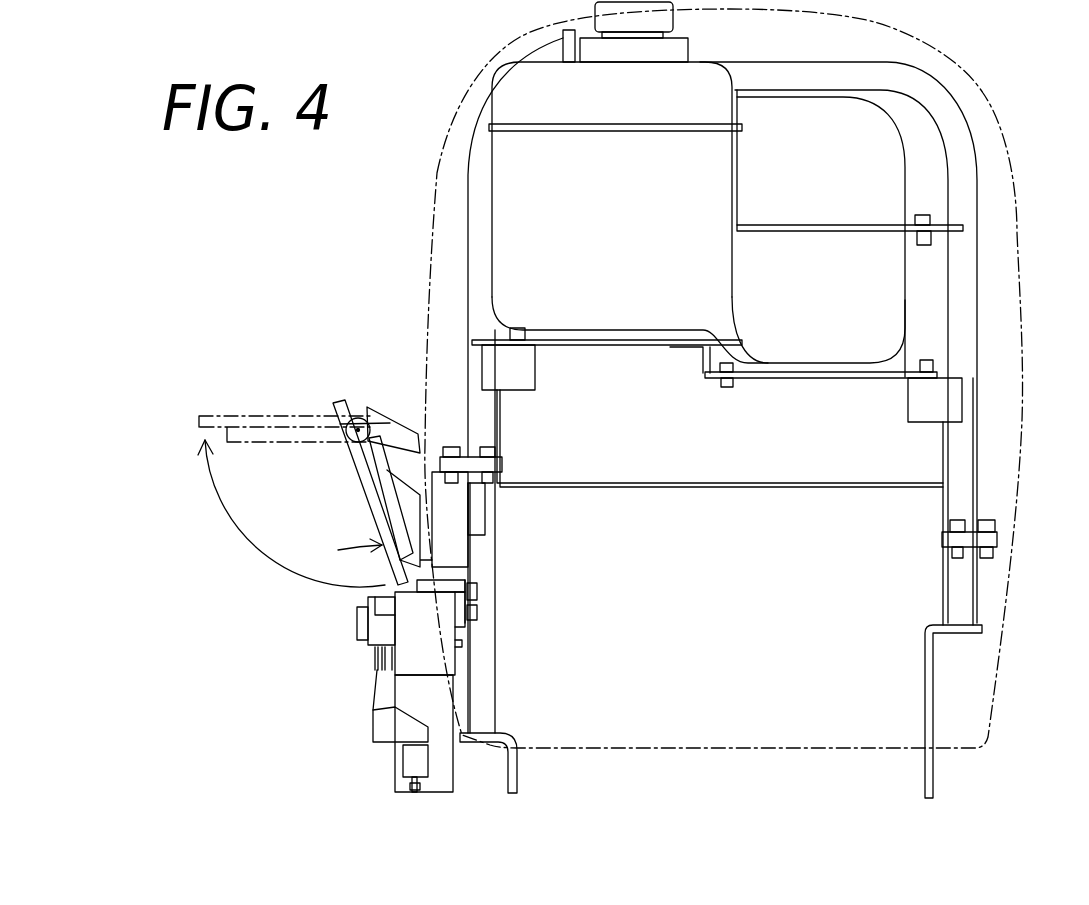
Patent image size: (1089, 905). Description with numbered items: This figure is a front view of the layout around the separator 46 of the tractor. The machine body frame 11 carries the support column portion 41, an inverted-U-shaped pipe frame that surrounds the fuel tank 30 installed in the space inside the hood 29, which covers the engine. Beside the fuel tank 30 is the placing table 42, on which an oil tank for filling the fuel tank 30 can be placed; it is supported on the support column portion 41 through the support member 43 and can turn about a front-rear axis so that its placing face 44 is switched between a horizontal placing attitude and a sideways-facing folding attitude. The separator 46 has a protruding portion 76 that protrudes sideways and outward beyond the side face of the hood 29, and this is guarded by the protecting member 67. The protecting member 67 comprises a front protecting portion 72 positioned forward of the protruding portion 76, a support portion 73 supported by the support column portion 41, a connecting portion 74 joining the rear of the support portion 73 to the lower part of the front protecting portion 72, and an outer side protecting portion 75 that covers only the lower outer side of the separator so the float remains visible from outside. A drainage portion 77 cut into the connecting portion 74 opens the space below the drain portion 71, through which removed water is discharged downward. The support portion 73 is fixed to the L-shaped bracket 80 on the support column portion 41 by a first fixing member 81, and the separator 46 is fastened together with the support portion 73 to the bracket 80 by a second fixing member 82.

The machine body frame 11 is at (517, 768).
The hood 29 is at (985, 90).
The fuel tank 30 is at (517, 90).
The support column portion 41 is at (487, 240).
The placing table 42 is at (306, 449).
The support member 43 is at (392, 457).
The placing face 44 is at (268, 413).
The separator 46 is at (383, 663).
The protecting member 67 is at (385, 762).
The drain portion 71 is at (415, 763).
The front protecting portion 72 is at (437, 697).
The support portion 73 is at (447, 583).
The connecting portion 74 is at (402, 755).
The outer side protecting portion 75 is at (388, 723).
The protruding portion 76 is at (383, 663).
The drainage portion 77 is at (408, 795).
The bracket 80 is at (487, 602).
The first fixing member 81 is at (475, 593).
The second fixing member 82 is at (477, 610).